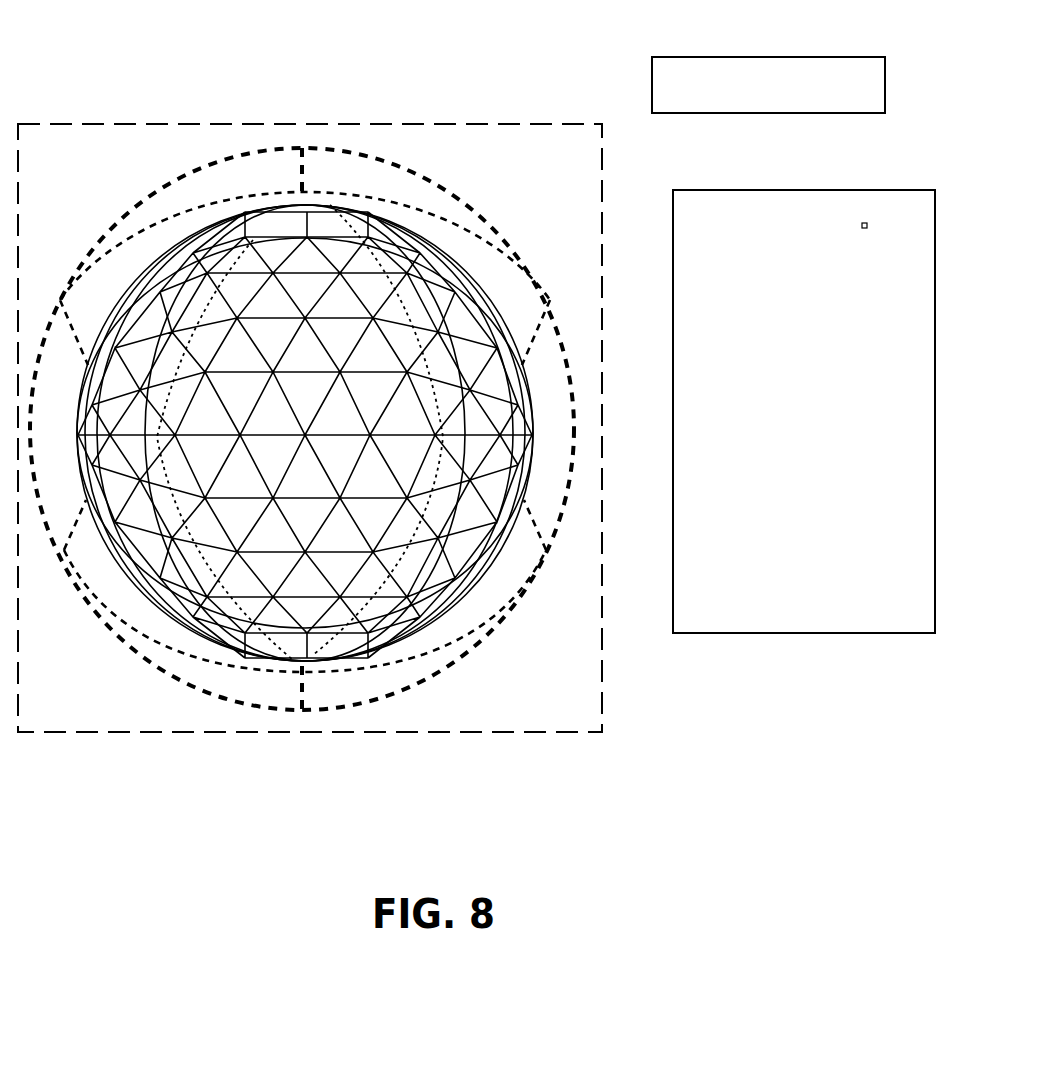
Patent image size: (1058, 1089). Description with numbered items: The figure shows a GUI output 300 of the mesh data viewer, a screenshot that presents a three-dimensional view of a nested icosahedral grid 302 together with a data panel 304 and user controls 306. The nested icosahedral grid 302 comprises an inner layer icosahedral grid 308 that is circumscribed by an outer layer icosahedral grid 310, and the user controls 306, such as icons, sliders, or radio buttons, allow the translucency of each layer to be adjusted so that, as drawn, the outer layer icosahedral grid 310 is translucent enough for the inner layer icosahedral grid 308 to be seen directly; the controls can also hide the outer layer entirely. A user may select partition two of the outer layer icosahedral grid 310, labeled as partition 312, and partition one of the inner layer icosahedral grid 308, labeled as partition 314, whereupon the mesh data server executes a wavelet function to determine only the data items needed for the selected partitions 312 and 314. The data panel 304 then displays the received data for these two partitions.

The GUI output 300 is at (125, 42).
The nested icosahedral grid 302 is at (413, 124).
The data panel 304 is at (755, 190).
The user controls 306 is at (679, 57).
The inner layer icosahedral grid 308 is at (452, 240).
The outer layer icosahedral grid 310 is at (450, 188).
The partition 2 of the outer layer icosahedral grid 312 is at (253, 240).
The partition 1 of the inner layer icosahedral grid 314 is at (307, 477).